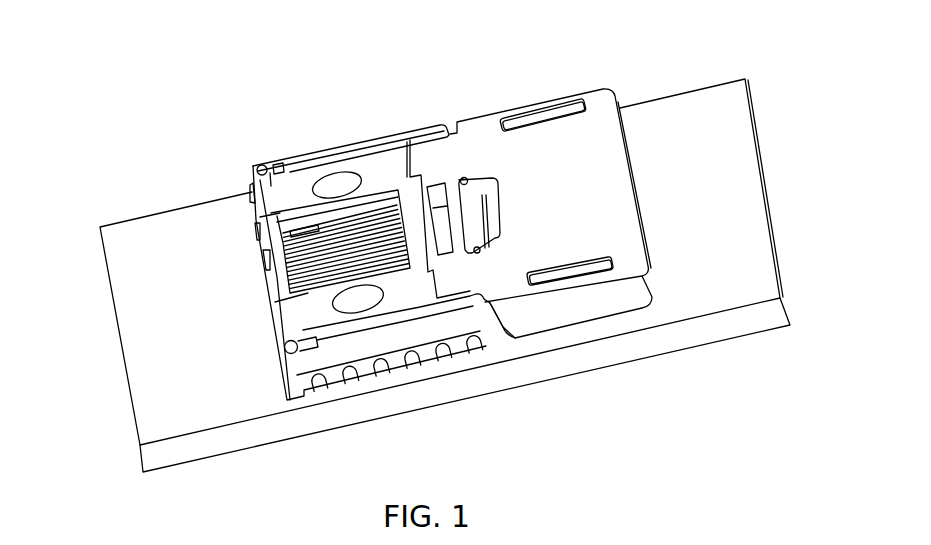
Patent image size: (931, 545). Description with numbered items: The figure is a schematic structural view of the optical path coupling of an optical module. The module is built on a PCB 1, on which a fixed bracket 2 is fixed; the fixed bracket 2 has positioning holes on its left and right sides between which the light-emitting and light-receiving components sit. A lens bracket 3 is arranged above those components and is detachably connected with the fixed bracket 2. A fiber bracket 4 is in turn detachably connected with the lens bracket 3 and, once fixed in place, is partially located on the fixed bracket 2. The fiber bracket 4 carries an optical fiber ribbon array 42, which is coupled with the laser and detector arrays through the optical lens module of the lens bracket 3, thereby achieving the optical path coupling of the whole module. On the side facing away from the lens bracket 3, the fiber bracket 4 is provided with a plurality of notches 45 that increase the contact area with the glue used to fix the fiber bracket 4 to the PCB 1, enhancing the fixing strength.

The PCB 1 is at (685, 110).
The fixed bracket 2 is at (403, 128).
The lens bracket 3 is at (483, 132).
The fiber bracket 4 is at (260, 167).
The optical fiber ribbon array 42 is at (289, 266).
The notches 45 is at (258, 215).